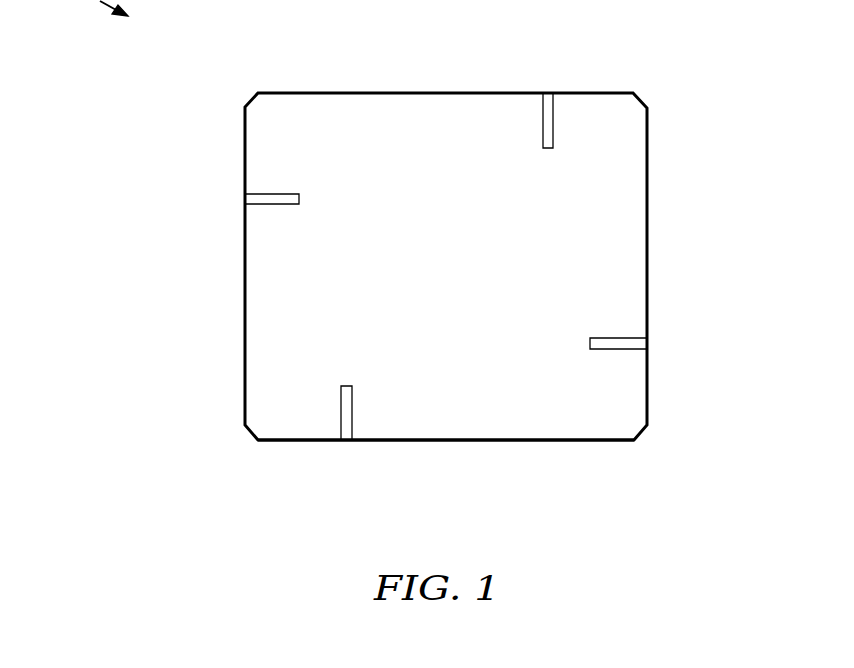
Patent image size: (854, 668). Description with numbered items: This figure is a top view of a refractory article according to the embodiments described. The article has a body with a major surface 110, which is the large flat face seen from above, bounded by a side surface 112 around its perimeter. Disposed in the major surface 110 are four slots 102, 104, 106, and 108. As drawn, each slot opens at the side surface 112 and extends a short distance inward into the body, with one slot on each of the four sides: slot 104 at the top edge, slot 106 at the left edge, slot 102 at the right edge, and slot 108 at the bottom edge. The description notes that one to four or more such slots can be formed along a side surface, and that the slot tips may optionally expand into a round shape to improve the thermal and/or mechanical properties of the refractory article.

The slot 102 is at (640, 343).
The slot 104 is at (548, 102).
The slot 106 is at (248, 199).
The slot 108 is at (347, 433).
The major surface 110 is at (630, 183).
The side surface 112 is at (550, 443).